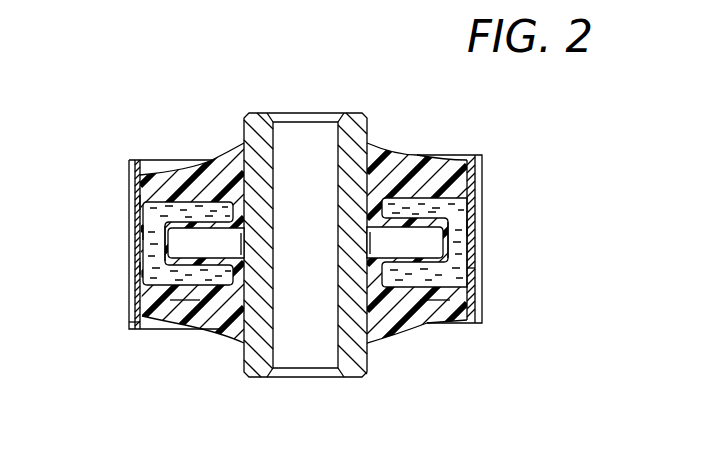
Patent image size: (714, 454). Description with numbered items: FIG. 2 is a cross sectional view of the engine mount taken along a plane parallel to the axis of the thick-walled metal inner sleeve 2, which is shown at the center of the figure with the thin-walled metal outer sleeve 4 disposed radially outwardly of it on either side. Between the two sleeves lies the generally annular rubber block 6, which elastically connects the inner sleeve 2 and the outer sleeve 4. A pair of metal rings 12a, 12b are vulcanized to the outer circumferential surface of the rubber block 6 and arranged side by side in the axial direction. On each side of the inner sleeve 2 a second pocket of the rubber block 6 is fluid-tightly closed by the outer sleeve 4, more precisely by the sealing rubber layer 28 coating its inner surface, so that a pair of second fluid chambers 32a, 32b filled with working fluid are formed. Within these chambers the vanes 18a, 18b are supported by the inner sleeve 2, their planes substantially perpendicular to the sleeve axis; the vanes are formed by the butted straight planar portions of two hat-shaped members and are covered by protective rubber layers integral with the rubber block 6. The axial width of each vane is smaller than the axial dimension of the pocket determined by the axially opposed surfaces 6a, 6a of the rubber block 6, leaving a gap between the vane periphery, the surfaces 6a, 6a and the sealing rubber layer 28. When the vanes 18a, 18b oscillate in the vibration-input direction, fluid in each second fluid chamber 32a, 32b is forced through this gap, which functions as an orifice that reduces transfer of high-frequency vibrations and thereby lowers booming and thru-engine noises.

The inner sleeve 2 is at (262, 122).
The outer sleeve 4 is at (140, 201).
The rubber block 6 is at (192, 163).
The axially opposed surfaces 6a is at (448, 280).
The metal ring 12a is at (146, 322).
The metal ring 12b is at (143, 160).
The vane 18a is at (170, 207).
The vane 18b is at (415, 208).
The sealing rubber layer 28 is at (475, 210).
The second fluid chamber 32a is at (186, 288).
The second fluid chamber 32b is at (436, 278).